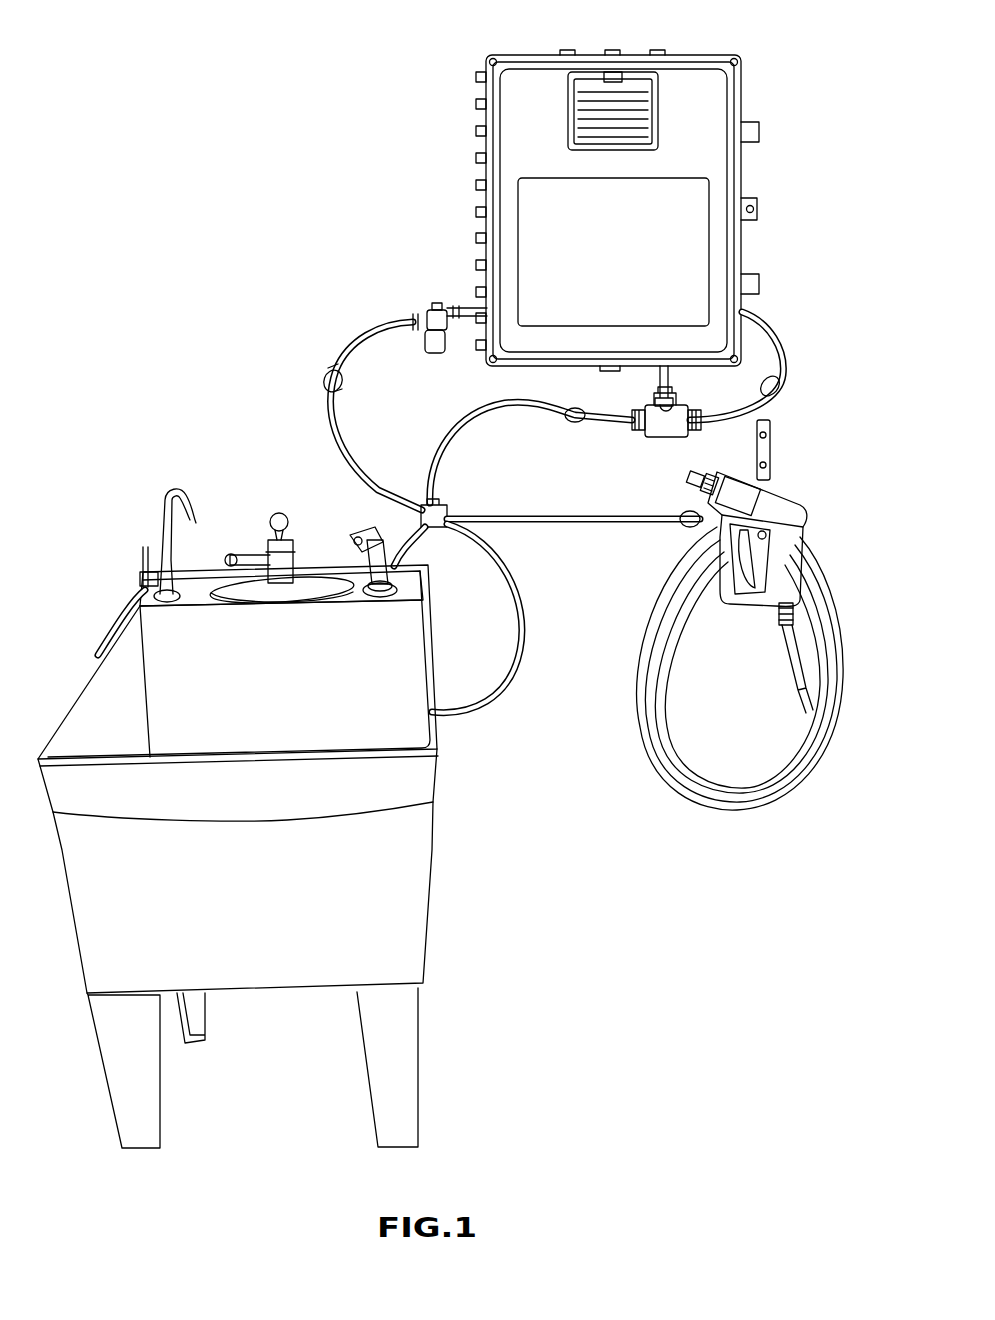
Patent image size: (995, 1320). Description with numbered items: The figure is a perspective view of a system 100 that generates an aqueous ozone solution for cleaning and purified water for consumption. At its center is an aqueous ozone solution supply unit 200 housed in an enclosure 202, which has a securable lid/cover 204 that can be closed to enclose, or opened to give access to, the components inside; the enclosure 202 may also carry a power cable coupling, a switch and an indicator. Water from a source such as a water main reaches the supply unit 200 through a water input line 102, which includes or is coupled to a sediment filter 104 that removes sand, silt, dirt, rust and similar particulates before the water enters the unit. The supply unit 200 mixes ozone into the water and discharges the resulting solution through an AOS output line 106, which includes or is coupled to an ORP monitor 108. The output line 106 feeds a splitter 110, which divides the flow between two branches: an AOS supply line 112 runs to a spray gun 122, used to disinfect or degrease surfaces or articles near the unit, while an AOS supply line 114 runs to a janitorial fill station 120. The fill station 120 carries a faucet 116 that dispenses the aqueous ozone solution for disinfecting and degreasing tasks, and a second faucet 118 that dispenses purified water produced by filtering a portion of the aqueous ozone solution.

The system 100 is at (176, 58).
The aqueous ozone solution supply unit 200 is at (538, 32).
The enclosure 202 is at (710, 57).
The securable lid/cover 204 is at (708, 188).
The water input line 102 is at (366, 340).
The sediment filter 104 is at (436, 353).
The AOS output line 106 is at (768, 328).
The ORP monitor 108 is at (672, 437).
The splitter 110 is at (440, 504).
The AOS supply line 112 is at (565, 517).
The AOS supply line 114 is at (405, 545).
The faucet 116 is at (262, 552).
The faucet 118 is at (163, 523).
The janitorial fill station 120 is at (433, 888).
The spray gun 122 is at (792, 505).